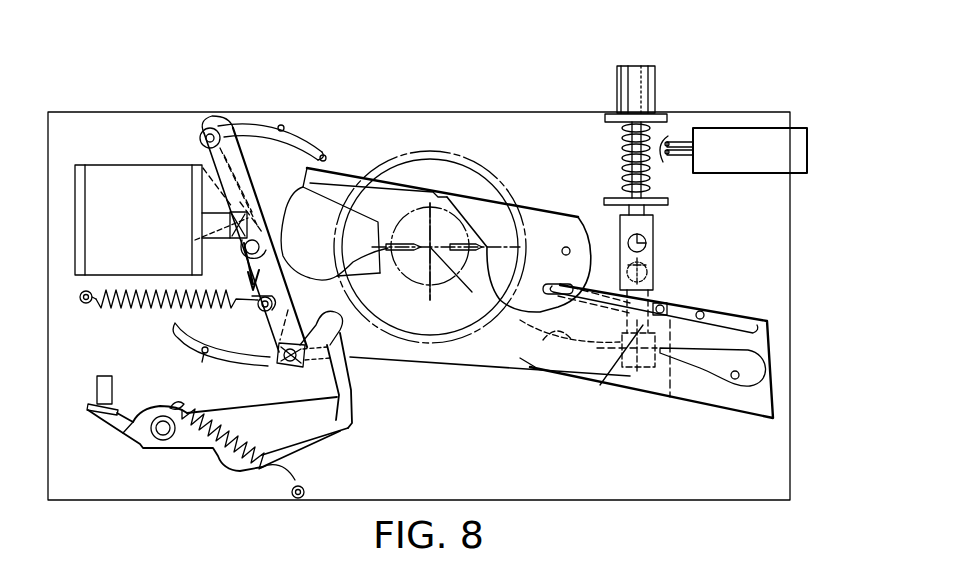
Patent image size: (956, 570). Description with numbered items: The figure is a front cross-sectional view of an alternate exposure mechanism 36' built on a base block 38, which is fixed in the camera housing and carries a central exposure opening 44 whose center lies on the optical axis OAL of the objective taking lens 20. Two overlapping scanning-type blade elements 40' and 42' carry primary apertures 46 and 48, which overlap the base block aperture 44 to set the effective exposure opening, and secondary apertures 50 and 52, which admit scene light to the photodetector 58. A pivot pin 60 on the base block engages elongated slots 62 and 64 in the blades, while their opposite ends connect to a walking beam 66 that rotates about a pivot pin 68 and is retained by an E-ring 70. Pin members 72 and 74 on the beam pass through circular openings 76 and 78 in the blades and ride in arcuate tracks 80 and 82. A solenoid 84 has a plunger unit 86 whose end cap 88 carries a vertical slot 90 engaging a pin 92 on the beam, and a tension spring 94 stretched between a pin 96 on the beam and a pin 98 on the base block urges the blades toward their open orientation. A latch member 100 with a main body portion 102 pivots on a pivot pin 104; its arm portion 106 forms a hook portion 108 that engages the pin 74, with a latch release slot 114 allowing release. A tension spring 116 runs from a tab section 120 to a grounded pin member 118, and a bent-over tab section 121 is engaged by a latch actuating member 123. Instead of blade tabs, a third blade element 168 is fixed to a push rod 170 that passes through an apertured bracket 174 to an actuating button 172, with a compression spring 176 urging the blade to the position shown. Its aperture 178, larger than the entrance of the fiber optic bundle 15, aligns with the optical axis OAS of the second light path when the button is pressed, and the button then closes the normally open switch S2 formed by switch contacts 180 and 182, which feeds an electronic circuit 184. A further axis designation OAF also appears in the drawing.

The fiber optic bundle 15 is at (571, 253).
The objective taking lens 20 is at (510, 182).
The exposure mechanism 36' is at (430, 212).
The base block 38 is at (590, 141).
The blade element 40' is at (341, 207).
The blade element 42' is at (561, 355).
The exposure opening 44 is at (408, 220).
The primary aperture 46 is at (282, 262).
The primary aperture 48 is at (578, 242).
The secondary aperture 50 is at (582, 342).
The secondary aperture 52 is at (732, 376).
The photodetector 58 is at (624, 327).
The pivot pin 60 is at (660, 304).
The elongated slot 62 is at (625, 291).
The elongated slot 64 is at (702, 312).
The walking beam 66 is at (270, 338).
The pivot pin 68 is at (252, 258).
The E-ring 70 is at (245, 250).
The pin member 72 is at (206, 133).
The pin member 74 is at (342, 342).
The circular opening 76 is at (204, 141).
The circular opening 78 is at (293, 374).
The arcuate track 80 is at (278, 133).
The arcuate slot 82 is at (215, 365).
The solenoid 84 is at (75, 215).
The plunger unit 86 is at (212, 213).
The end cap 88 is at (262, 215).
The vertical slot 90 is at (248, 205).
The pin 92 is at (200, 236).
The tension spring 94 is at (140, 302).
The pin 96 is at (281, 298).
The pin 98 is at (85, 300).
The latch member 100 is at (193, 464).
The main body portion 102 is at (334, 432).
The pivot pin 104 is at (163, 437).
The arm portion 106 is at (357, 389).
The hook portion 108 is at (282, 362).
The latch release slot 114 is at (332, 396).
The tension spring 116 is at (270, 476).
The pin member 118 is at (305, 492).
The tab section 120 is at (176, 402).
The tab section 121 is at (115, 404).
The latch actuating member 123 is at (102, 381).
The blade element 168 is at (653, 225).
The push rod 170 is at (622, 134).
The actuating button 172 is at (641, 65).
The apertured bracket 174 is at (612, 199).
The compression spring 176 is at (622, 166).
The aperture 178 is at (646, 244).
The switch contact 180 is at (690, 156).
The switch contact 182 is at (670, 159).
The electronic circuit 184 is at (855, 150).
The switch S2 is at (685, 134).
The optical axis of the second light path OAS is at (655, 269).
The optical axis of the objective taking lens OAL is at (453, 280).
The axis OAF is at (611, 367).